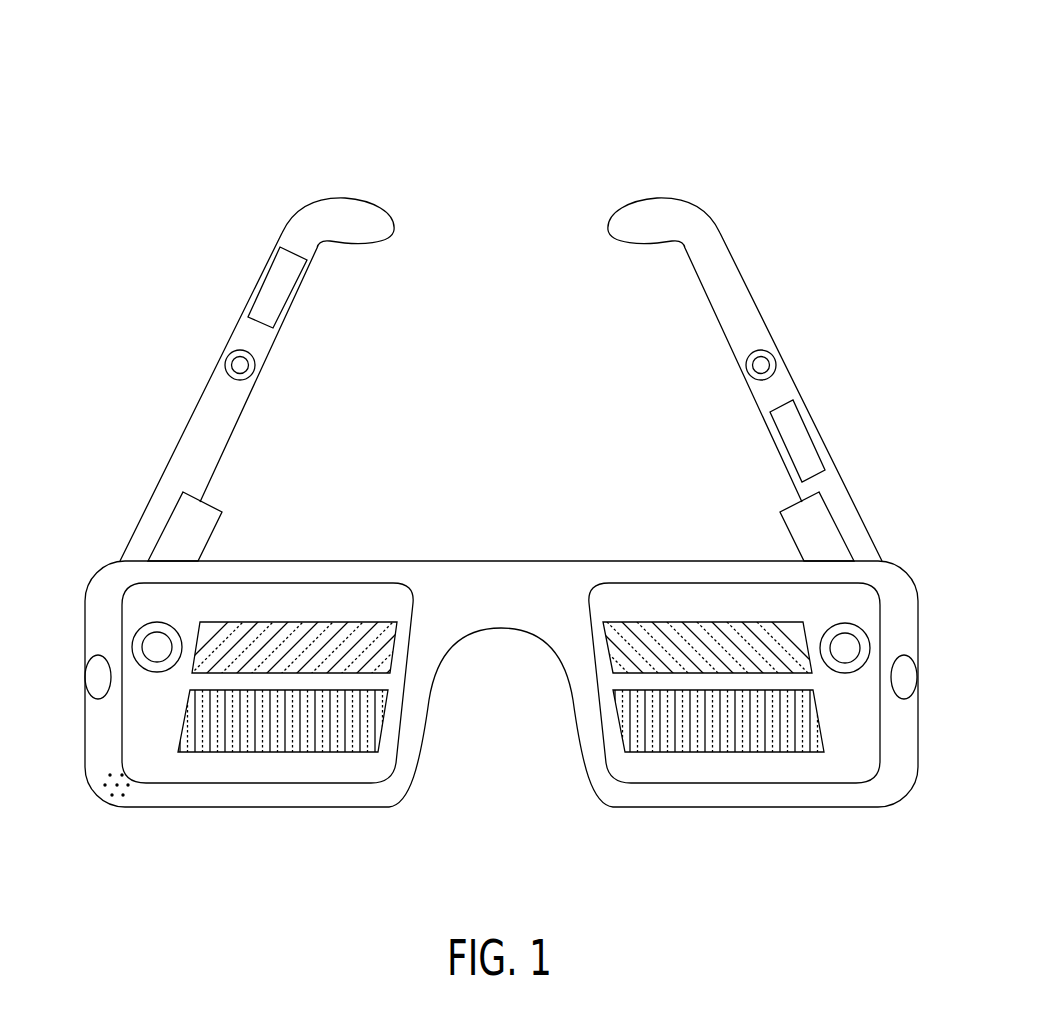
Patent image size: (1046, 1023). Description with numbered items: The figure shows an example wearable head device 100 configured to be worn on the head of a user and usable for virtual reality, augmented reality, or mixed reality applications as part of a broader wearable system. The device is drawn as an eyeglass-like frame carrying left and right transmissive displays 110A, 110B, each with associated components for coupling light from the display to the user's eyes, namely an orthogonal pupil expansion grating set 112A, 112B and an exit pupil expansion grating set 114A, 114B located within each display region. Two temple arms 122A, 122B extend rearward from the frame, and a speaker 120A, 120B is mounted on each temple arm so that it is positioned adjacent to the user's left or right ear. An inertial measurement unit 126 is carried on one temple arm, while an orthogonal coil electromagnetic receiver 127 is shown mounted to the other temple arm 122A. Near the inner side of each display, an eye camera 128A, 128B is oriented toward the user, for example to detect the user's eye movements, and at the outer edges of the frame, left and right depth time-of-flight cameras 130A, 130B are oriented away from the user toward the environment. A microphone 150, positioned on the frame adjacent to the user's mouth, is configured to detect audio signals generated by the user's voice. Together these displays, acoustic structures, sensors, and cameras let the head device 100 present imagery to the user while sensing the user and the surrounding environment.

The wearable head device 100 is at (130, 110).
The display 110A is at (658, 583).
The display 110B is at (347, 583).
The orthogonal pupil expansion (OPE) grating set 112A is at (708, 653).
The orthogonal pupil expansion (OPE) grating set 112B is at (243, 653).
The exit pupil expansion (EPE) grating set 114A is at (738, 753).
The exit pupil expansion (EPE) grating set 114B is at (287, 753).
The speaker 120A is at (775, 357).
The speaker 120B is at (255, 368).
The temple arm 122A is at (707, 248).
The temple arm 122B is at (310, 223).
The inertial measurement unit (IMU) 126 is at (297, 293).
The orthogonal coil electromagnetic receiver 127 is at (812, 435).
The eye camera 128A is at (837, 665).
The eye camera 128B is at (167, 668).
The depth (time-of-flight) camera 130A is at (907, 673).
The depth (time-of-flight) camera 130B is at (92, 678).
The microphone 150 is at (112, 797).